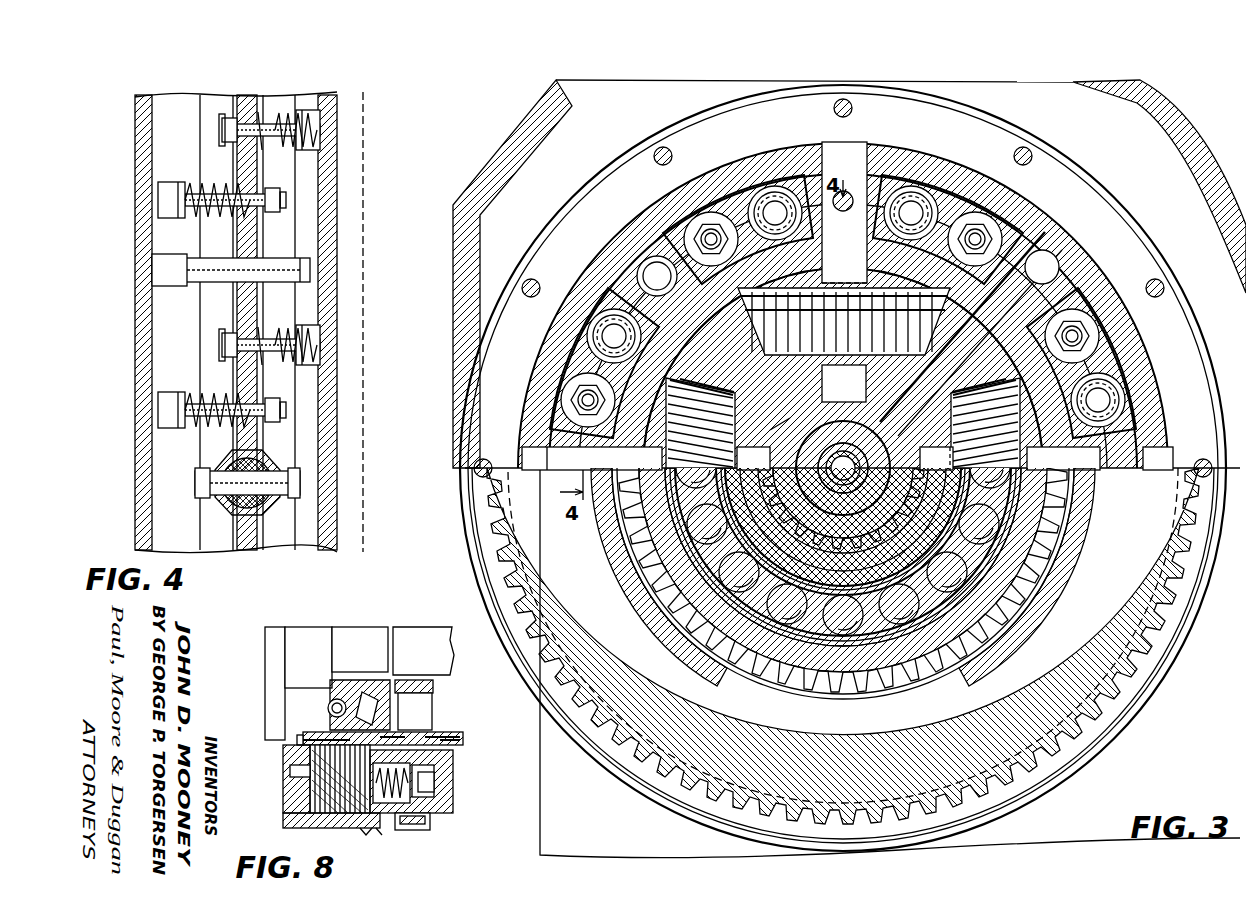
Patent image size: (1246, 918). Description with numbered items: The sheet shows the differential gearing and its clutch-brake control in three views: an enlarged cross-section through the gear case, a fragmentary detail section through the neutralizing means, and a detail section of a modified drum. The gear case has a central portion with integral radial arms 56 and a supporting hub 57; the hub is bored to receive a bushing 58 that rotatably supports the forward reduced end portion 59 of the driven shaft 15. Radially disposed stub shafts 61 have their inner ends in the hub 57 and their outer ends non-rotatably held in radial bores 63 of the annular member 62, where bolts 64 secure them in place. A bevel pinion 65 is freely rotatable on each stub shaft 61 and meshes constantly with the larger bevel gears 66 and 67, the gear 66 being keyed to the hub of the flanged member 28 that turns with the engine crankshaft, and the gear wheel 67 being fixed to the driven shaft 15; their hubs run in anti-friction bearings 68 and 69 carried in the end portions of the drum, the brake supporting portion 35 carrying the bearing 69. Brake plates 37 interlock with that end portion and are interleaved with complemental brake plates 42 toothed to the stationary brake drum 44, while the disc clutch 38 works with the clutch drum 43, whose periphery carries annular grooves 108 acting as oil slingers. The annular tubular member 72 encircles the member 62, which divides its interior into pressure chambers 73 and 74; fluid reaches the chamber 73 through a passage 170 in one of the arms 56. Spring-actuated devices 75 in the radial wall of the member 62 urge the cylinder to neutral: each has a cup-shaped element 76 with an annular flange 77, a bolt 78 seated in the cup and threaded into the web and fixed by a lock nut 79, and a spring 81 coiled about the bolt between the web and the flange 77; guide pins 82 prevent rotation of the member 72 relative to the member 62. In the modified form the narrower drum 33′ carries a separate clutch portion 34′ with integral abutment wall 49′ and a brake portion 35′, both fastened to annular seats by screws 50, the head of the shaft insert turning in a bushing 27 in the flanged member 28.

In FIG. 3, the driven shaft 15 is at (985, 560).
In FIG. 8, the driven shaft 15 is at (452, 645).
In FIG. 8, the bushing 27 is at (388, 635).
In FIG. 8, the flanged member 28 is at (272, 640).
In FIG. 8, the drum 33′ is at (452, 724).
In FIG. 8, the clutch portion 34′ is at (312, 732).
In FIG. 3, the brake supporting portion 35 is at (708, 613).
In FIG. 8, the brake portion 35′ is at (452, 737).
In FIG. 3, the brake plates 37 is at (860, 690).
In FIG. 8, the disc clutch 38 is at (345, 785).
In FIG. 3, the brake plates 42 is at (843, 468).
In FIG. 8, the clutch drum 43 is at (293, 820).
In FIG. 3, the brake drum 44 is at (1030, 782).
In FIG. 8, the abutment wall 49′ is at (312, 765).
In FIG. 8, the screws 50 is at (310, 742).
In FIG. 3, the radial arms 56 is at (712, 345).
In FIG. 8, the radial arms 56 is at (415, 711).
In FIG. 3, the supporting hub 57 is at (762, 424).
In FIG. 8, the supporting hub 57 is at (433, 686).
In FIG. 3, the bushing 58 is at (845, 400).
In FIG. 3, the forward reduced end portion 59 is at (753, 458).
In FIG. 3, the stub shafts 61 is at (1072, 470).
In FIG. 4, the stub shafts 61 is at (275, 460).
In FIG. 3, the annular member 62 is at (925, 155).
In FIG. 4, the annular member 62 is at (272, 527).
In FIG. 8, the annular member 62 is at (433, 797).
In FIG. 3, the radial bores 63 is at (833, 142).
In FIG. 4, the radial bores 63 is at (228, 498).
In FIG. 3, the bolts 64 is at (845, 190).
In FIG. 4, the bolts 64 is at (300, 483).
In FIG. 3, the bevel pinion 65 is at (940, 298).
In FIG. 8, the bevel gear 66 is at (380, 700).
In FIG. 3, the gear wheel 67 is at (873, 557).
In FIG. 8, the anti-friction bearing 68 is at (340, 702).
In FIG. 3, the anti-friction bearing 69 is at (763, 607).
In FIG. 3, the annular tubular member 72 is at (1076, 176).
In FIG. 4, the annular tubular member 72 is at (352, 214).
In FIG. 8, the annular tubular member 72 is at (461, 818).
In FIG. 4, the pressure chamber 73 is at (168, 133).
In FIG. 8, the pressure chamber 73 is at (383, 800).
In FIG. 4, the pressure chamber 74 is at (312, 180).
In FIG. 8, the pressure chamber 74 is at (437, 780).
In FIG. 4, the spring-actuated devices 75 is at (330, 334).
In FIG. 3, the cup-shaped element 76 is at (777, 210).
In FIG. 4, the cup-shaped element 76 is at (283, 325).
In FIG. 3, the annular flange 77 is at (610, 330).
In FIG. 4, the annular flange 77 is at (320, 360).
In FIG. 3, the bolt 78 is at (711, 239).
In FIG. 4, the bolt 78 is at (218, 338).
In FIG. 3, the lock nut 79 is at (705, 235).
In FIG. 4, the lock nut 79 is at (236, 330).
In FIG. 4, the spring 81 is at (265, 355).
In FIG. 3, the guide pins 82 is at (653, 275).
In FIG. 4, the guide pins 82 is at (300, 270).
In FIG. 8, the annular grooves 108 is at (372, 822).
In FIG. 3, the fluid passage 170 is at (1020, 295).